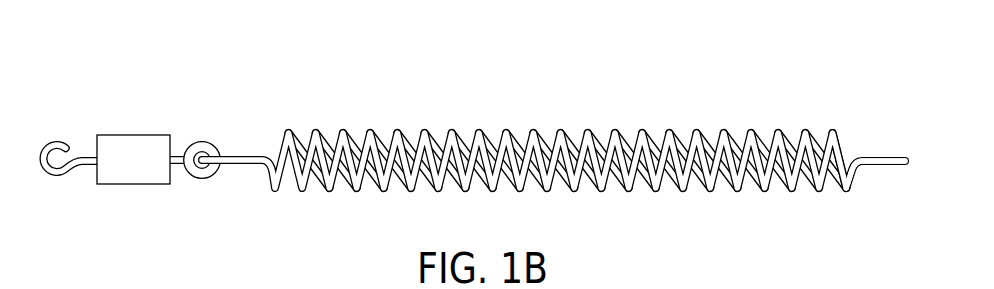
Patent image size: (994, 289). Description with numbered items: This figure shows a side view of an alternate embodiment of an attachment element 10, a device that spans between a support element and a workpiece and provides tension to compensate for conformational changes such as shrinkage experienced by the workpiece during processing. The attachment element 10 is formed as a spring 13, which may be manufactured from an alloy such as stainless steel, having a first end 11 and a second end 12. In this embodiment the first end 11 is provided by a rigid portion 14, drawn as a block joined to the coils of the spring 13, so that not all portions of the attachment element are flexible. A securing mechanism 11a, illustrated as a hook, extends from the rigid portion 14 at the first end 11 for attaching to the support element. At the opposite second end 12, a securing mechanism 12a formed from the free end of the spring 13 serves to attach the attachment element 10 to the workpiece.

The attachment element 10 is at (559, 142).
The first end 11 is at (131, 155).
The securing mechanism 11a is at (61, 190).
The second end 12 is at (847, 151).
The securing mechanism 12a is at (885, 181).
The spring 13 is at (328, 206).
The rigid portion 14 is at (152, 135).